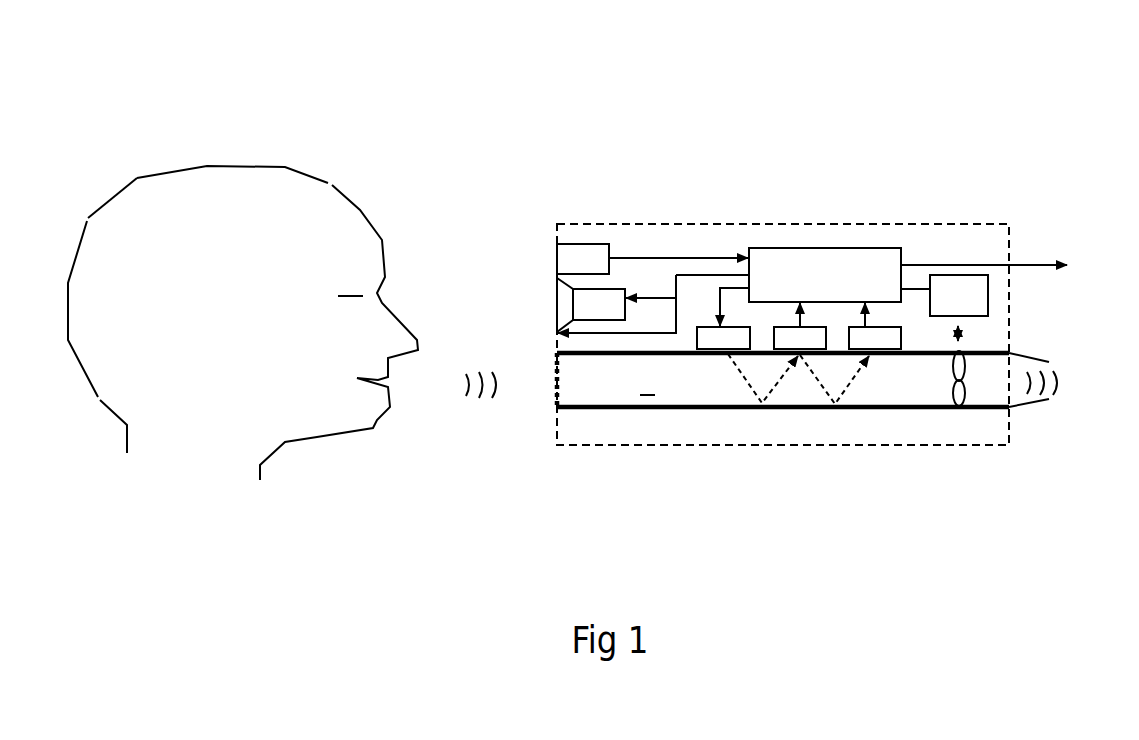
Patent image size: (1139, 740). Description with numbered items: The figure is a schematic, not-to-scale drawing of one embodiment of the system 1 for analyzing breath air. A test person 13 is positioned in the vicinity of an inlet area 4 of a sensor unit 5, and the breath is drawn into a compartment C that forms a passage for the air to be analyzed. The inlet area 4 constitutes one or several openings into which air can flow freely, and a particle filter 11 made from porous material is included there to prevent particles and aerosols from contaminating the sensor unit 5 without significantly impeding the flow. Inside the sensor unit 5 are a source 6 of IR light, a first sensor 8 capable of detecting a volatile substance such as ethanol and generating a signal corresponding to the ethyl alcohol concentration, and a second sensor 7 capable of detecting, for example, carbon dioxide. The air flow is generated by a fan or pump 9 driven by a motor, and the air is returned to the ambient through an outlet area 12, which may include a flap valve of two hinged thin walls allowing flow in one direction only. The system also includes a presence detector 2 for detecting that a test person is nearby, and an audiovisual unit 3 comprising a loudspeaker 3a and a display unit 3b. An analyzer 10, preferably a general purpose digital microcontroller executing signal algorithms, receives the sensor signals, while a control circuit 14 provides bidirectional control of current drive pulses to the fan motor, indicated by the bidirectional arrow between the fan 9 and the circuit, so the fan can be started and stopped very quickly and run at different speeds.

The system 1 is at (844, 170).
The presence detector 2 is at (557, 258).
The audiovisual unit 3 is at (440, 269).
The loudspeaker 3a is at (557, 307).
The display unit 3b is at (538, 338).
The inlet area 4 is at (521, 408).
The sensor unit 5 is at (677, 448).
The source of IR light 6 is at (713, 327).
The second sensor 7 is at (781, 343).
The first sensor 8 is at (882, 341).
The fan or pump 9 is at (958, 387).
The analyzer 10 is at (782, 293).
The particle filter 11 is at (557, 372).
The outlet area 12 is at (1068, 404).
The test person 13 is at (192, 333).
The control circuit 14 is at (967, 313).
The compartment C is at (803, 380).